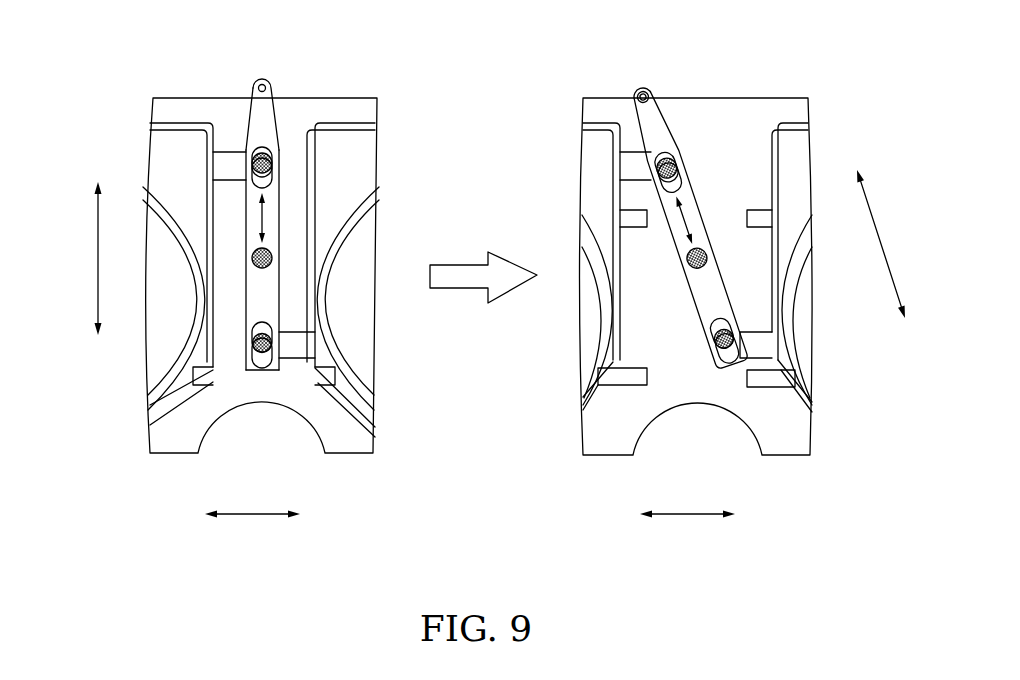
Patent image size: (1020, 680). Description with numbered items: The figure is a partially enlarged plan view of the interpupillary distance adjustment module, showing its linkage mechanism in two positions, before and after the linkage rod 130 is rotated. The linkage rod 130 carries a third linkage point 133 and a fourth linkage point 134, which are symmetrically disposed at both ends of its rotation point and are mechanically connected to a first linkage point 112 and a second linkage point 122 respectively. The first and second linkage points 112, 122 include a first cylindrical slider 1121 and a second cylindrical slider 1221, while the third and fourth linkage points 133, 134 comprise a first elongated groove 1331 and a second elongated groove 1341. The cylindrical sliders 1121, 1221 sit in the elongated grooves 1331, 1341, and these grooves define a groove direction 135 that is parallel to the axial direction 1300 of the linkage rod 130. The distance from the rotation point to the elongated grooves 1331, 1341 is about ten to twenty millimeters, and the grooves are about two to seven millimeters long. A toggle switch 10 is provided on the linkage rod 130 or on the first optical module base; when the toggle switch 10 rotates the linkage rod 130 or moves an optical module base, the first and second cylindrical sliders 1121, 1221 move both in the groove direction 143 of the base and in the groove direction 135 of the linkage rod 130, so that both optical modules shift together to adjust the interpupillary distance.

The toggle switch 10 is at (262, 82).
The first linkage point 112 is at (265, 152).
The first cylindrical slider 1121 is at (275, 148).
The first elongated groove 1331 is at (256, 145).
The third linkage point 133 is at (273, 178).
The axial direction 1300 is at (266, 220).
The linkage rod 130 is at (272, 301).
The second cylindrical slider 1221 is at (275, 346).
The second linkage point 122 is at (265, 352).
The fourth linkage point 134 is at (259, 355).
The second elongated groove 1341 is at (252, 333).
The groove direction 135 is at (98, 256).
The groove direction 143 is at (251, 518).